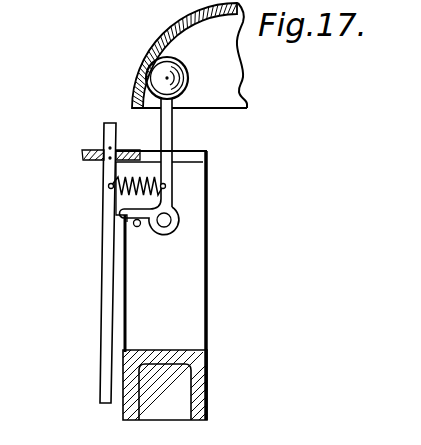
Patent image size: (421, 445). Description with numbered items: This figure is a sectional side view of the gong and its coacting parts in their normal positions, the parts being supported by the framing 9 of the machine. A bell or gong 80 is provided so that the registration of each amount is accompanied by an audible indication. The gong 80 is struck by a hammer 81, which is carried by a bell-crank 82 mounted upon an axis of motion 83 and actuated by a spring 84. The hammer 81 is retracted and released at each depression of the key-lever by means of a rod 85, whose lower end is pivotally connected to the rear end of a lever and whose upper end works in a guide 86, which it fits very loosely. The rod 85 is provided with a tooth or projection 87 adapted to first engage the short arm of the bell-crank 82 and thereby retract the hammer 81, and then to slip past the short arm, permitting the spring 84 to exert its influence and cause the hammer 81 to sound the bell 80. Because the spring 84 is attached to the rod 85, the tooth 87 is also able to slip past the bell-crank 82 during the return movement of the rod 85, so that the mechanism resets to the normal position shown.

The framing 9 is at (213, 354).
The bell or gong 80 is at (240, 91).
The hammer 81 is at (190, 53).
The bell-crank 82 is at (173, 119).
The axis of motion 83 is at (167, 221).
The spring 84 is at (113, 194).
The rod 85 is at (105, 308).
The guide 86 is at (84, 151).
The tooth or projection 87 is at (121, 225).